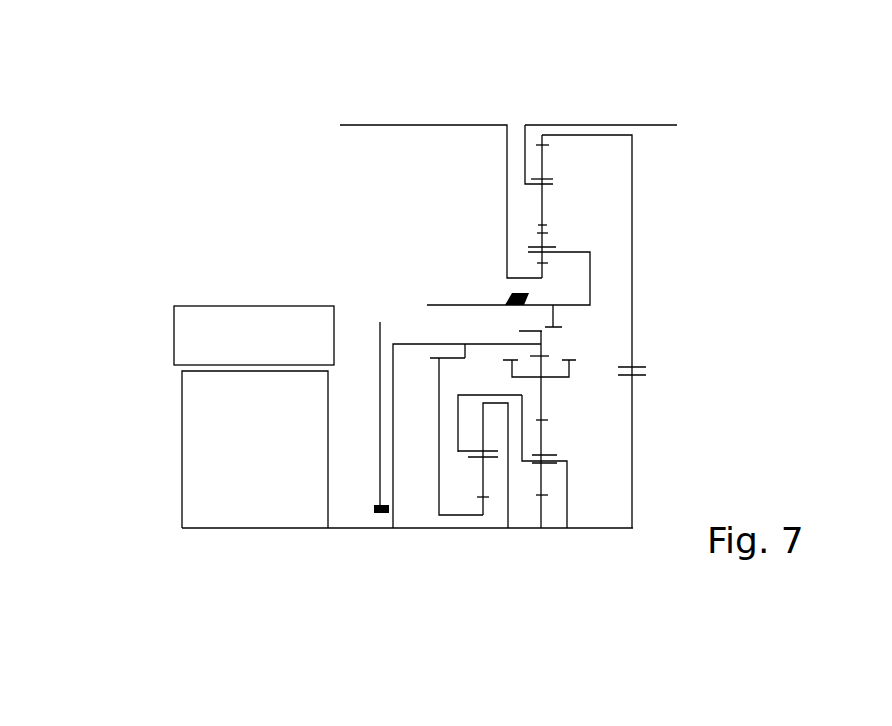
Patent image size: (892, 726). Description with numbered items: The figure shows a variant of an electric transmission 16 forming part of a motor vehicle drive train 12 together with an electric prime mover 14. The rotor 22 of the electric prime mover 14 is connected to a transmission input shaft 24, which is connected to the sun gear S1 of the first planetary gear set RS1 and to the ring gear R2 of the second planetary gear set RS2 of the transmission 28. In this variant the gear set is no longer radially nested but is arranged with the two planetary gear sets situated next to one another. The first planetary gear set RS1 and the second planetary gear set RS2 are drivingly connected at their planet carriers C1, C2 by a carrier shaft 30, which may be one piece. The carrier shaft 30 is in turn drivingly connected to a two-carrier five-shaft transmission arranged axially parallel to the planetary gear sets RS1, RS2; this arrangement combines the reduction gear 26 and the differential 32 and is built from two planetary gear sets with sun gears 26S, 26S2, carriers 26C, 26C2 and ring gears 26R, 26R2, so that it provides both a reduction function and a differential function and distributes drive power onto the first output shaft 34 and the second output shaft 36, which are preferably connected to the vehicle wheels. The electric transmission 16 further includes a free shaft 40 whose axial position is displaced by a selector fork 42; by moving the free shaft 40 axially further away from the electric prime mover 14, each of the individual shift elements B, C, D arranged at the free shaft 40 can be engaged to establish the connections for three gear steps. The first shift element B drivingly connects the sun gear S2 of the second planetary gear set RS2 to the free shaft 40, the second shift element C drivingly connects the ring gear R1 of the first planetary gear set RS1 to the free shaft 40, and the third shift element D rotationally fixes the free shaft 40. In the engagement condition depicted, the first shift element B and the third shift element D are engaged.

The motor vehicle drive train 12 is at (124, 96).
The electric prime mover 14 is at (168, 239).
The electric transmission 16 is at (92, 104).
The rotor 22 is at (220, 530).
The transmission input shaft 24 is at (380, 530).
The reduction gear 26 is at (531, 143).
The transmission 28 is at (500, 586).
The carrier shaft 30 is at (569, 485).
The differential 32 is at (569, 64).
The first output shaft 34 is at (352, 126).
The second output shaft 36 is at (664, 127).
The free shaft 40 is at (413, 343).
The selector fork 42 is at (380, 353).
The ring gear 26R2 is at (546, 140).
The carrier 26C2 is at (553, 183).
The sun gear 26S2 is at (540, 226).
The ring gear 26R is at (550, 229).
The planet carrier 26C is at (578, 249).
The sun gear 26S is at (567, 279).
The third shift element D is at (570, 317).
The second shift element C is at (563, 347).
The first shift element B is at (436, 362).
The ring gear R2 is at (481, 403).
The ring gear R1 is at (546, 418).
The planet carrier C1 is at (558, 451).
The planet carrier C2 is at (462, 455).
The sun gear S1 is at (544, 502).
The sun gear S2 is at (490, 502).
The first planetary gear set RS1 is at (557, 590).
The second planetary gear set RS2 is at (424, 586).